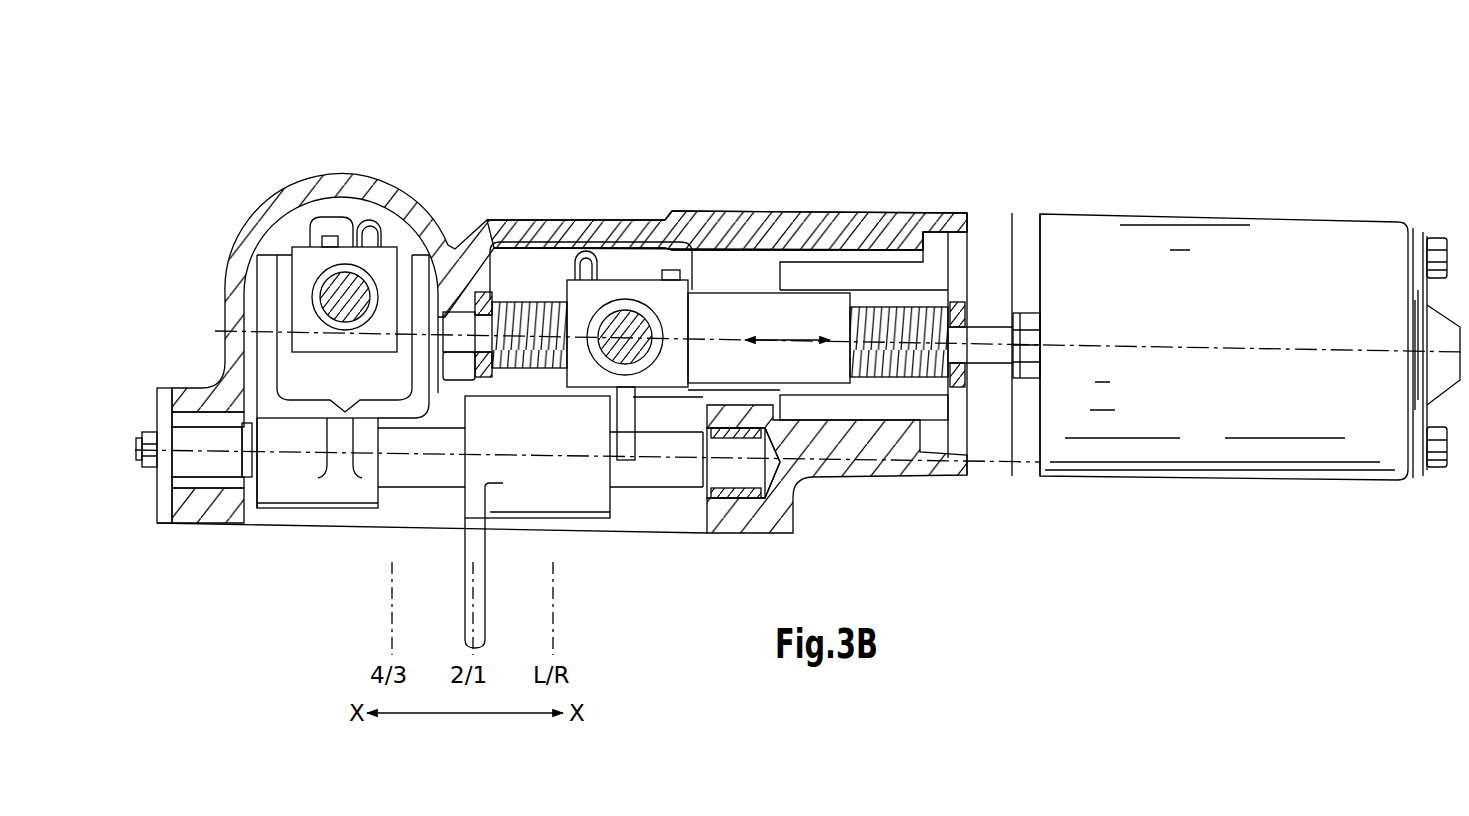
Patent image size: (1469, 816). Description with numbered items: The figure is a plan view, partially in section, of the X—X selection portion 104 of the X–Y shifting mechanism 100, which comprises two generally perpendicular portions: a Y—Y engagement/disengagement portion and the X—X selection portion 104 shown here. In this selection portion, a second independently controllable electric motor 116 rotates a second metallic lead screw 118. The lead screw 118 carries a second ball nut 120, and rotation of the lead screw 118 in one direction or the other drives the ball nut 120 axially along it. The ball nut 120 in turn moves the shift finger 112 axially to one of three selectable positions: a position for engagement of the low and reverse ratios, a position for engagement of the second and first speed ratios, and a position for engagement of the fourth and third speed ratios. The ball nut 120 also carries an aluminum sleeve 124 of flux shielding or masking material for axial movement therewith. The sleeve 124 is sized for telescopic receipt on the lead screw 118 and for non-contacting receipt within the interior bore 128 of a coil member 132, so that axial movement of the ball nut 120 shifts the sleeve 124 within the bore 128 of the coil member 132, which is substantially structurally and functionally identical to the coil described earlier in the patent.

The X–Y shifting mechanism 100 is at (1236, 182).
The X—X selection portion 104 is at (719, 124).
The shift finger 112 is at (480, 566).
The second independently controllable electric motor 116 is at (1250, 331).
The second metallic lead screw 118 is at (528, 303).
The second ball nut 120 is at (653, 292).
The aluminum sleeve 124 is at (743, 298).
The interior bore 128 is at (886, 293).
The coil member 132 is at (885, 412).